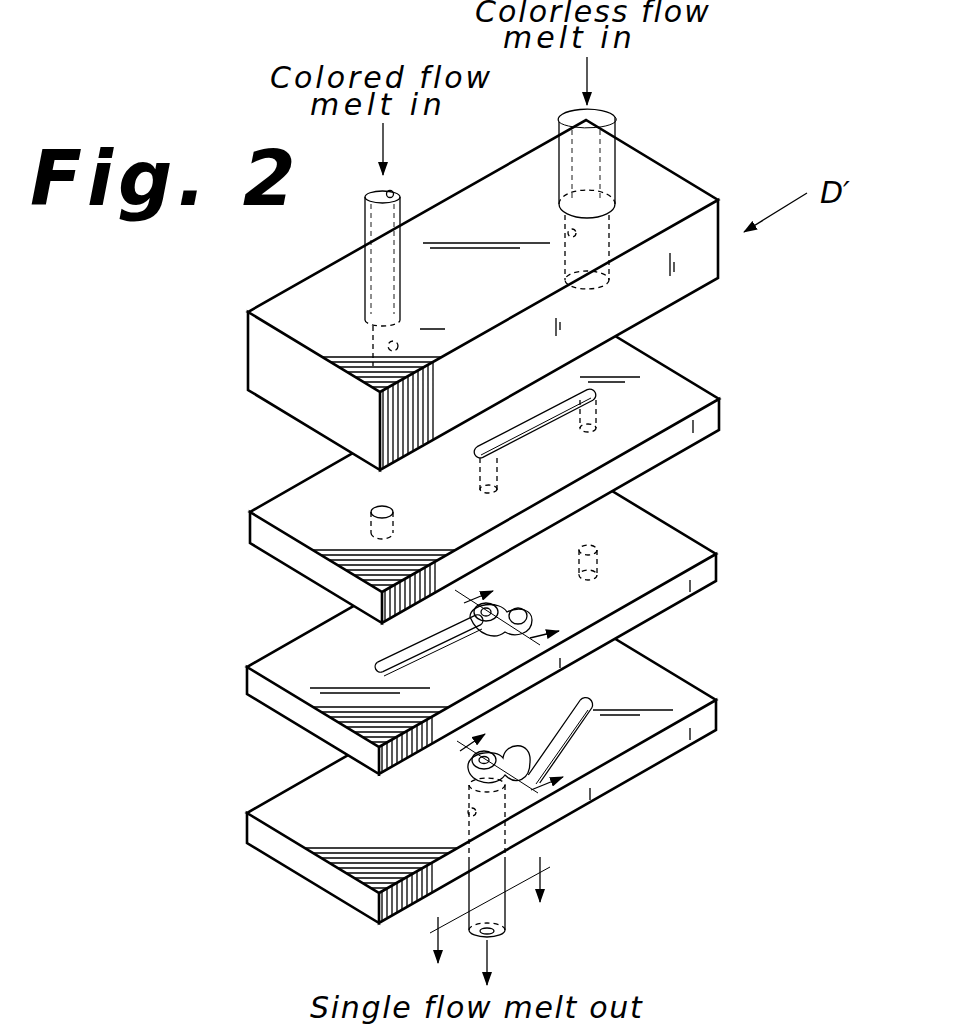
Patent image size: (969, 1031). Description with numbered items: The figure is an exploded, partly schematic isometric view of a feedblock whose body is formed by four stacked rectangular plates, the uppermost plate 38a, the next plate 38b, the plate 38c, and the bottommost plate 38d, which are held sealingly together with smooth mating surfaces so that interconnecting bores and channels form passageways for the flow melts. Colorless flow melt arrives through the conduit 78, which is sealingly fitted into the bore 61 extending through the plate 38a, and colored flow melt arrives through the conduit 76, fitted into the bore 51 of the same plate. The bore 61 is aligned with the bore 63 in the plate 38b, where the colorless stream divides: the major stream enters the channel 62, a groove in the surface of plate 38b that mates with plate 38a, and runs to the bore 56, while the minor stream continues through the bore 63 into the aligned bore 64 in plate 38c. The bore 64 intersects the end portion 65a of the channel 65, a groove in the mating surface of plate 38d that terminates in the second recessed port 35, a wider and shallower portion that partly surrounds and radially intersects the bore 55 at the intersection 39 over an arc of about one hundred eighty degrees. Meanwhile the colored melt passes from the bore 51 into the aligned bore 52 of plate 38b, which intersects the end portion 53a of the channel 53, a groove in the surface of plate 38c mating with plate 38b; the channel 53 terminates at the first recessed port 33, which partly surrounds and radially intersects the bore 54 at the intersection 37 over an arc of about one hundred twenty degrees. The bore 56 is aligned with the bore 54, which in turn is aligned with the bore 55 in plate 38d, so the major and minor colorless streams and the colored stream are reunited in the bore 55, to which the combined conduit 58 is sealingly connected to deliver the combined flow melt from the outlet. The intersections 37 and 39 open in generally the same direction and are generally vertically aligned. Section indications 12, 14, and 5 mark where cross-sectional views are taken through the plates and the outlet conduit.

The uppermost feedblock structural plate 38a is at (266, 360).
The second feedblock structural plate 38b is at (260, 535).
The third feedblock structural plate 38c is at (256, 682).
The bottommost feedblock structural plate 38d is at (258, 830).
The conduit 76 is at (388, 217).
The conduit 78 is at (605, 174).
The bore 61 is at (570, 228).
The bore 51 is at (398, 341).
The bore 52 is at (368, 518).
The bore 56 is at (478, 478).
The channel 62 is at (516, 448).
The bore 63 is at (601, 409).
The bore 64 is at (603, 556).
The channel 53 is at (402, 657).
The end portion of channel 53a is at (374, 667).
The bore 54 is at (472, 627).
The intersection 37 is at (474, 611).
The first recessed port 33 is at (530, 622).
The section line 12- 12 is at (521, 601).
The channel 65 is at (575, 734).
The end portion of channel 65a is at (608, 688).
The second recessed port 35 is at (463, 777).
The intersection 39 is at (474, 765).
The section line 14- 14 is at (527, 753).
The bore 55 is at (467, 814).
The combined conduit 58 is at (500, 918).
The section line 5- 5 is at (489, 917).